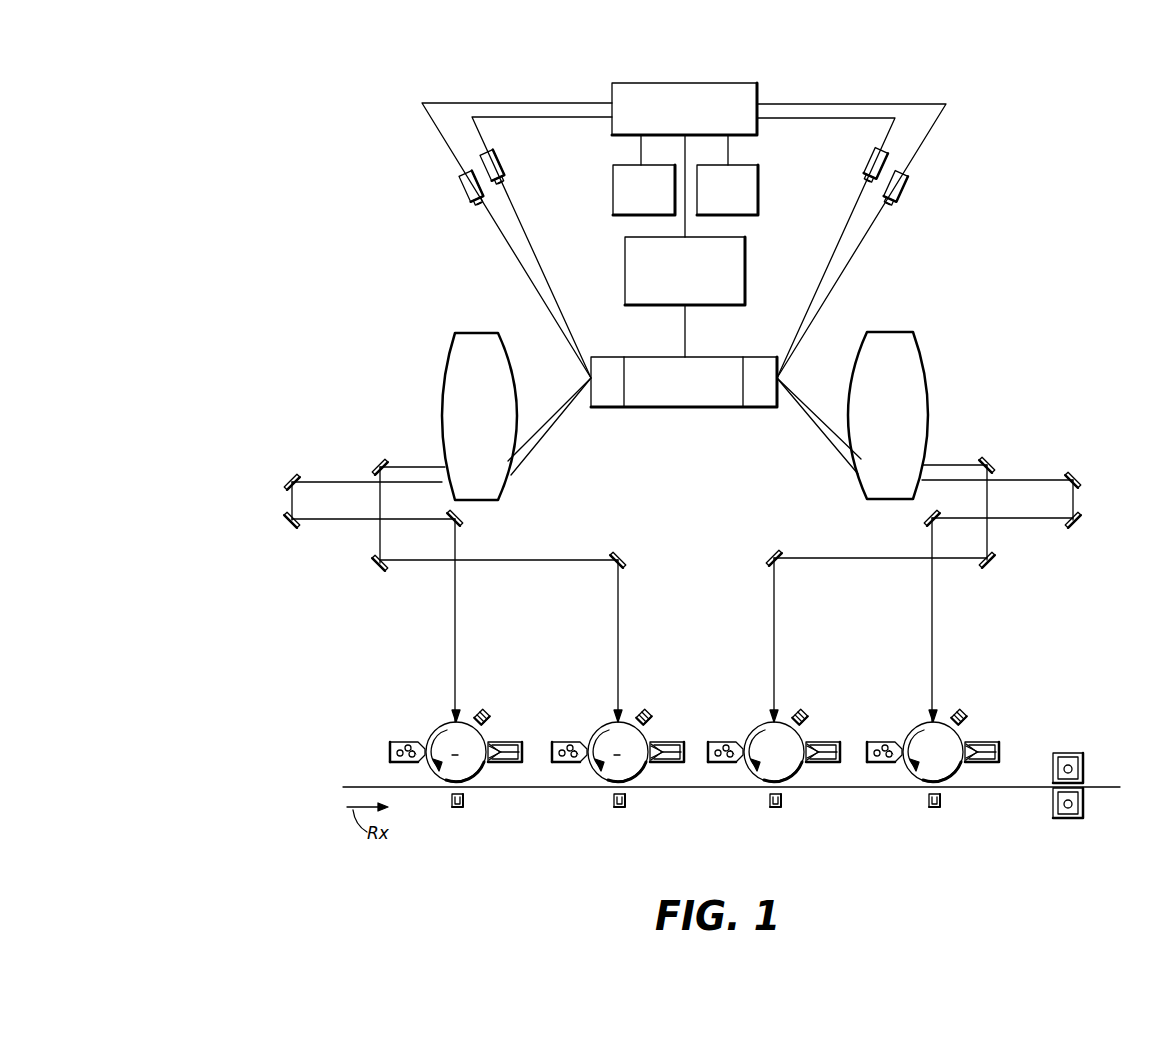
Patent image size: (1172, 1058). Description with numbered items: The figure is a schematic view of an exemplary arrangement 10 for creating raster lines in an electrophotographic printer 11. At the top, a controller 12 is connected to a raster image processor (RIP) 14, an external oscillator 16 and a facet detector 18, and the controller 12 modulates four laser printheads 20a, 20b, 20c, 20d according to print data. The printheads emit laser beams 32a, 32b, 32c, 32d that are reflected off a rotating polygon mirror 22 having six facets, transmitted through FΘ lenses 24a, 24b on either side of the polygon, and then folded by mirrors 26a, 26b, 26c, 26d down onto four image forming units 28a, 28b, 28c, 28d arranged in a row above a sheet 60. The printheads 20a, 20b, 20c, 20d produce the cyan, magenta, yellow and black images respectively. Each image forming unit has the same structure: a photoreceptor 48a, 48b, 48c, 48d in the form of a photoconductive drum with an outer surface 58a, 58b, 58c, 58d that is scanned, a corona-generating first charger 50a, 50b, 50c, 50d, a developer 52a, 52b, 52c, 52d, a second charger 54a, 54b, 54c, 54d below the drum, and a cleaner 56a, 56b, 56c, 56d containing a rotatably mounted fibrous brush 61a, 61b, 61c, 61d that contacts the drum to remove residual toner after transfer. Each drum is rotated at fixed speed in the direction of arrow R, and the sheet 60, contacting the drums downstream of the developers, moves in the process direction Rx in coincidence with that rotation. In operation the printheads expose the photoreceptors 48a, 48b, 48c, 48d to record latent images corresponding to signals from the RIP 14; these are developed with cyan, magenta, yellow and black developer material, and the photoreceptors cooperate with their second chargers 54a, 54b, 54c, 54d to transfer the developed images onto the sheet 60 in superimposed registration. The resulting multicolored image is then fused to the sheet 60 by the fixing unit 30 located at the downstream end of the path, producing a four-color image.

The arrangement 10 is at (1015, 138).
The electrophotographic printer 11 is at (352, 188).
The controller 12 is at (759, 95).
The raster image processor (RIP) 14 is at (613, 187).
The external oscillator 16 is at (759, 187).
The facet detector 18 is at (746, 268).
The laser printhead 20a is at (498, 160).
The laser printhead 20b is at (466, 197).
The laser printhead 20c is at (899, 202).
The laser printhead 20d is at (866, 160).
The rotating polygon mirror 22 is at (712, 408).
The FΘ lens 24a is at (502, 495).
The FΘ lens 24b is at (862, 493).
The mirror 26a is at (286, 477).
The mirror 26b is at (375, 461).
The mirror 26c is at (995, 460).
The mirror 26d is at (1080, 475).
The image forming unit 28a is at (438, 718).
The image forming unit 28b is at (600, 718).
The image forming unit 28c is at (745, 718).
The image forming unit 28d is at (904, 718).
The fixing unit 30 is at (1070, 752).
The laser beam 32a is at (537, 267).
The laser beam 32b is at (527, 272).
The laser beam 32c is at (862, 247).
The laser beam 32d is at (822, 287).
The photoreceptor 48a is at (438, 743).
The photoreceptor 48b is at (600, 743).
The photoreceptor 48c is at (757, 743).
The photoreceptor 48d is at (915, 743).
The first charger 50a is at (493, 699).
The first charger 50b is at (655, 699).
The first charger 50c is at (811, 699).
The first charger 50d is at (970, 699).
The developer 52a is at (409, 765).
The developer 52b is at (571, 765).
The developer 52c is at (727, 765).
The developer 52d is at (886, 765).
The second charger 54a is at (479, 817).
The second charger 54b is at (641, 817).
The second charger 54c is at (797, 817).
The second charger 54d is at (956, 817).
The cleaner 56a is at (513, 736).
The cleaner 56b is at (675, 736).
The cleaner 56c is at (831, 736).
The cleaner 56d is at (990, 736).
The outer surface 58a is at (488, 789).
The outer surface 58b is at (650, 789).
The outer surface 58c is at (806, 789).
The outer surface 58d is at (965, 789).
The sheet 60 is at (352, 787).
The fibrous brush 61a is at (514, 766).
The fibrous brush 61b is at (676, 766).
The fibrous brush 61c is at (832, 766).
The fibrous brush 61d is at (991, 766).